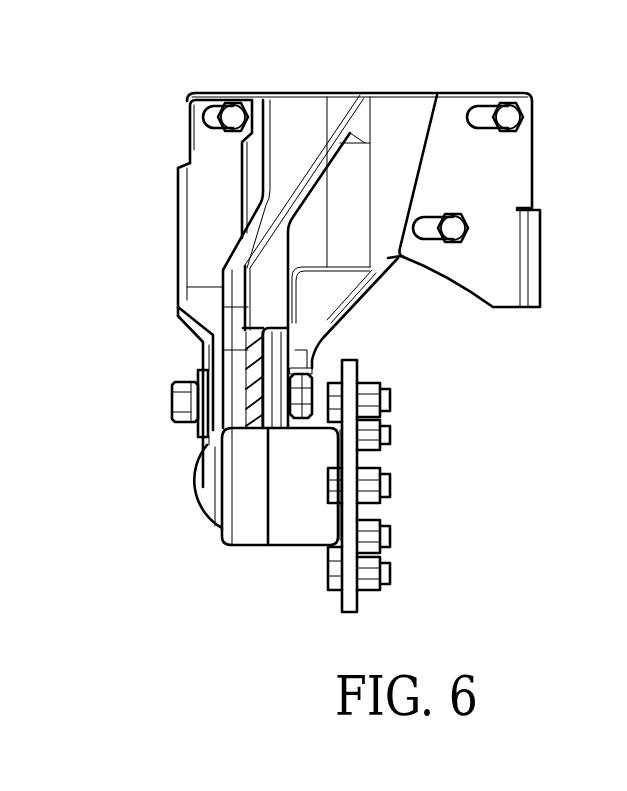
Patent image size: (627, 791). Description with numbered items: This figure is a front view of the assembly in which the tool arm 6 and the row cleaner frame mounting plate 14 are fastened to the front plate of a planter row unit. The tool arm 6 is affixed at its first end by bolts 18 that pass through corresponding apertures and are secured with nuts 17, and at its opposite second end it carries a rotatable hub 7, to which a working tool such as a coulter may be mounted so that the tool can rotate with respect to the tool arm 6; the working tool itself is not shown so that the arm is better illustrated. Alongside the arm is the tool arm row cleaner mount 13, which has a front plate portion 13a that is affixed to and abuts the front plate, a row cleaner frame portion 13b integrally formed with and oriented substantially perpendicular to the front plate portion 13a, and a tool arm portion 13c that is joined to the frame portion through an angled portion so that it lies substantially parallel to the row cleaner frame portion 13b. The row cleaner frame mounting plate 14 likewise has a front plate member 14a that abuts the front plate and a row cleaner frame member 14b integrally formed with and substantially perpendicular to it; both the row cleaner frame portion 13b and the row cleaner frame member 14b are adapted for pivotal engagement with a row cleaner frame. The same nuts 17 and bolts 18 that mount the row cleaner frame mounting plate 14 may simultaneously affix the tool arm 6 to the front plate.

The tool arm 6 is at (380, 288).
The rotatable hub 7 is at (350, 462).
The tool arm row cleaner mount 13 is at (165, 293).
The front plate portion 13a is at (208, 140).
The row cleaner frame portion 13b is at (178, 228).
The tool arm portion 13c is at (205, 447).
The row cleaner frame mounting plate 14 is at (505, 179).
The front plate member 14a is at (450, 128).
The row cleaner frame member 14b is at (537, 282).
The nut 17 is at (172, 400).
The bolt 18 is at (235, 115).